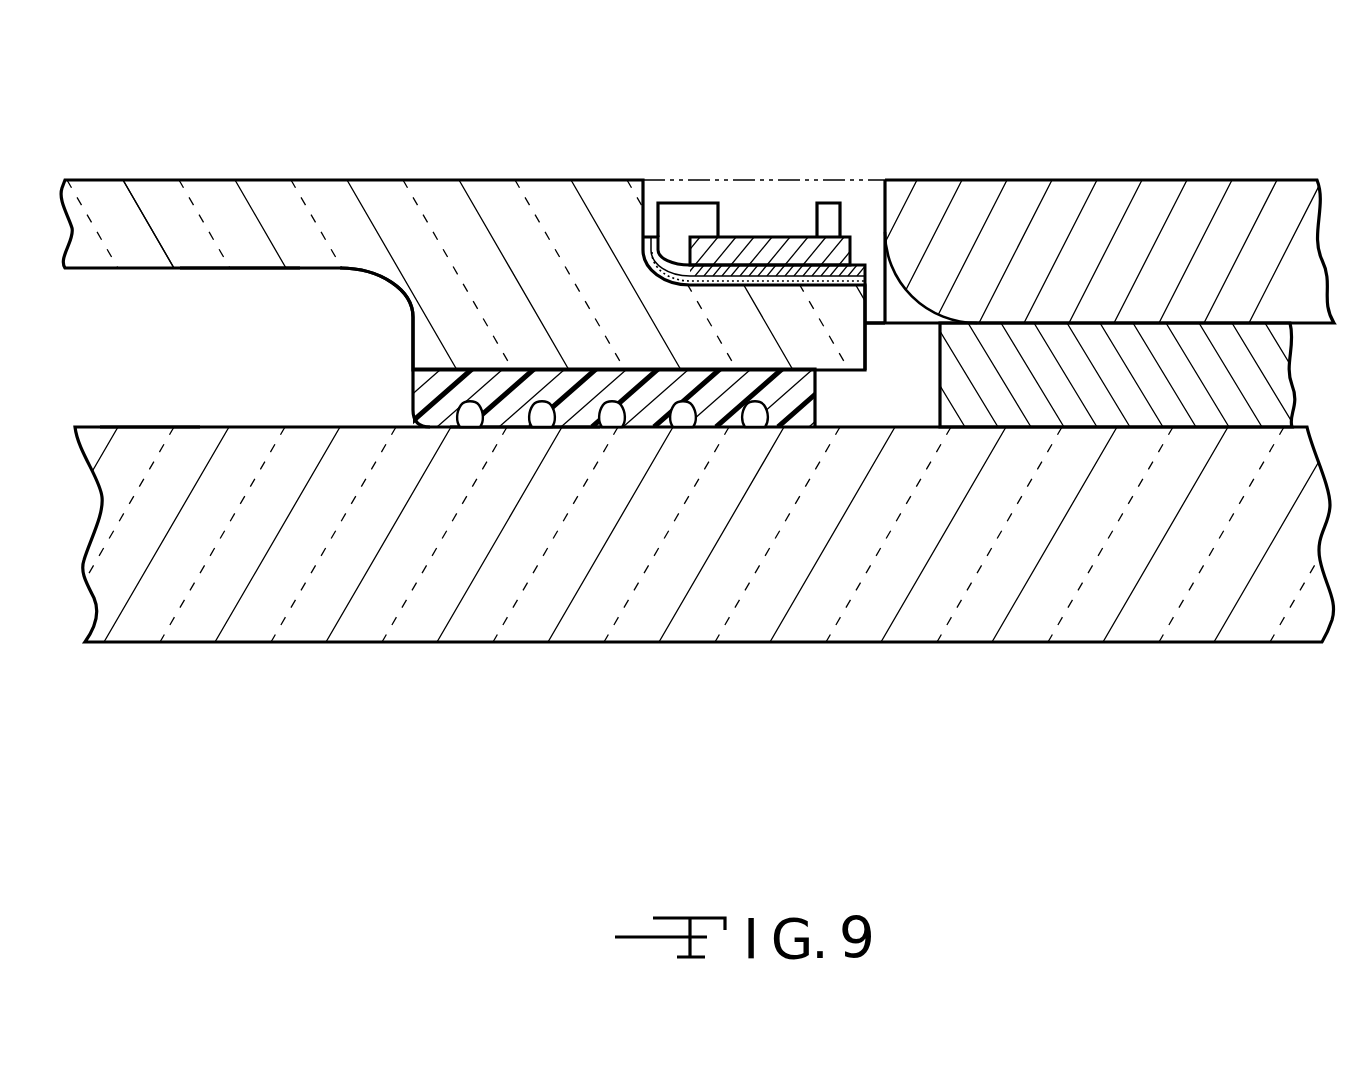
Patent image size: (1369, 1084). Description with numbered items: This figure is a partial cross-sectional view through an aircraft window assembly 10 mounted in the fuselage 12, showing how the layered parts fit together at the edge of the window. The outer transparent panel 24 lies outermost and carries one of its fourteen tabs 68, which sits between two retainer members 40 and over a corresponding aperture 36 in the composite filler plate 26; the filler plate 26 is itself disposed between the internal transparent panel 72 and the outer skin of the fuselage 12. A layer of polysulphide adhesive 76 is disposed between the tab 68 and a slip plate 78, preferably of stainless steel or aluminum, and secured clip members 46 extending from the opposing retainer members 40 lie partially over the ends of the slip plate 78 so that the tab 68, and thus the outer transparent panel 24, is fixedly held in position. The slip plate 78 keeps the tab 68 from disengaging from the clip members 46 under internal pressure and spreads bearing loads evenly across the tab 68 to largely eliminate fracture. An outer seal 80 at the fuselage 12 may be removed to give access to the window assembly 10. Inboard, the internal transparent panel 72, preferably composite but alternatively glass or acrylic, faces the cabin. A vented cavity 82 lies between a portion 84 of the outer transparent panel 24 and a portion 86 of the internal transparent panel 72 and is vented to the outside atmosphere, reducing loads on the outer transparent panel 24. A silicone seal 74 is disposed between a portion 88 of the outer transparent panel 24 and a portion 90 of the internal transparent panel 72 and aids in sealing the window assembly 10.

The window assembly 10 is at (577, 132).
The fuselage 12 is at (1015, 192).
The outer transparent panel 24 is at (380, 212).
The composite filler plate 26 is at (1250, 393).
The apertures 36 is at (737, 213).
The retainer members 40 is at (683, 215).
The clip members 46 is at (783, 247).
The tabs 68 is at (594, 428).
The internal transparent panel 72 is at (928, 586).
The silicone seal 74 is at (433, 393).
The polysulphide adhesive 76 is at (834, 290).
The slip plate 78 is at (837, 270).
The outer seal 80 is at (780, 178).
The vented cavity 82 is at (232, 310).
The portion of the outer transparent panel 84 is at (112, 198).
The portion of the internal transparent panel 86 is at (140, 442).
The portion of the outer transparent panel 88 is at (515, 348).
The portion of the internal transparent panel 90 is at (515, 457).